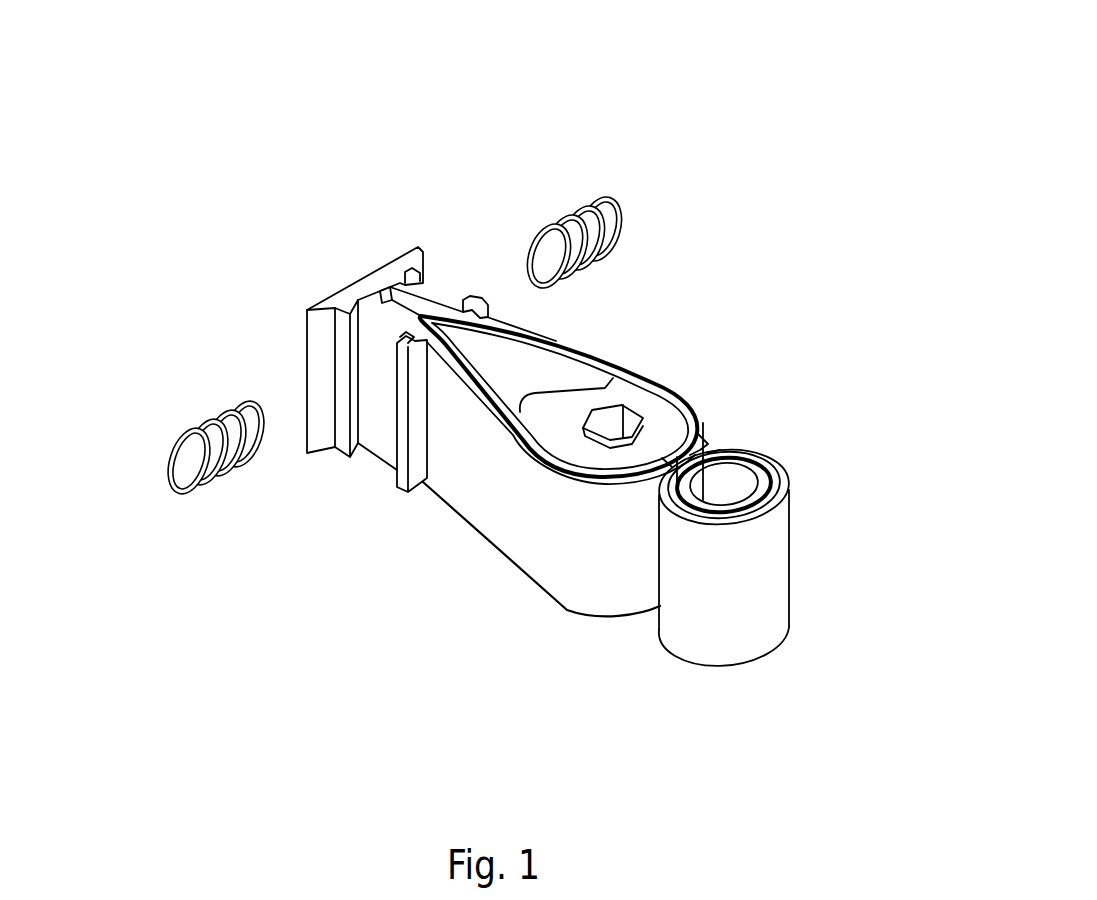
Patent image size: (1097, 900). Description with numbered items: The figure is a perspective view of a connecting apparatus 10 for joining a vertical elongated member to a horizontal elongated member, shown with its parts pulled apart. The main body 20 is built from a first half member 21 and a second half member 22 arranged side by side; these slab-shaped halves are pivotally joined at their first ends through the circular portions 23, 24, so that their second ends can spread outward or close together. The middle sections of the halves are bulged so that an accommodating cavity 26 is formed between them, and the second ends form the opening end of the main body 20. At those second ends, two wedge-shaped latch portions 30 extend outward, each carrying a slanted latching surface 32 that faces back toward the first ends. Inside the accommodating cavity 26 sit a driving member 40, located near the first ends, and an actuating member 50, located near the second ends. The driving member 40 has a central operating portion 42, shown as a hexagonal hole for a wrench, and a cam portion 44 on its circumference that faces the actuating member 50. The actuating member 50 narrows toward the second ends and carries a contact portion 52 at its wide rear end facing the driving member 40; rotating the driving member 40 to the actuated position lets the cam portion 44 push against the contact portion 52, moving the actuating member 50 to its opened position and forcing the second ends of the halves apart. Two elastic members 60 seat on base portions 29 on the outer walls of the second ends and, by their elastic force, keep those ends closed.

The connecting apparatus 10 is at (659, 142).
The main body 20 is at (609, 487).
The first half member 21 is at (667, 396).
The second half member 22 is at (518, 548).
The circular portion 23 is at (753, 467).
The circular portion 24 is at (700, 627).
The accommodating cavity 26 is at (548, 340).
The base portion 29 is at (380, 387).
The latch portion 30 is at (366, 325).
The latching surface 32 is at (320, 355).
The driving member 40 is at (677, 414).
The operating portion 42 is at (610, 430).
The cam portion 44 is at (515, 428).
The actuating member 50 is at (505, 342).
The contact portion 52 is at (568, 385).
The elastic member 60 is at (553, 217).